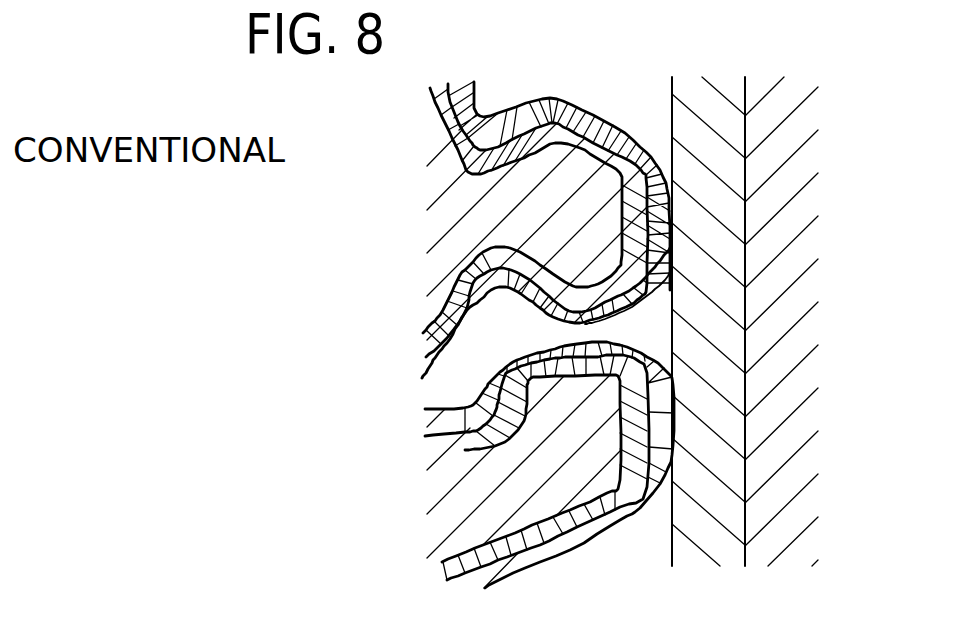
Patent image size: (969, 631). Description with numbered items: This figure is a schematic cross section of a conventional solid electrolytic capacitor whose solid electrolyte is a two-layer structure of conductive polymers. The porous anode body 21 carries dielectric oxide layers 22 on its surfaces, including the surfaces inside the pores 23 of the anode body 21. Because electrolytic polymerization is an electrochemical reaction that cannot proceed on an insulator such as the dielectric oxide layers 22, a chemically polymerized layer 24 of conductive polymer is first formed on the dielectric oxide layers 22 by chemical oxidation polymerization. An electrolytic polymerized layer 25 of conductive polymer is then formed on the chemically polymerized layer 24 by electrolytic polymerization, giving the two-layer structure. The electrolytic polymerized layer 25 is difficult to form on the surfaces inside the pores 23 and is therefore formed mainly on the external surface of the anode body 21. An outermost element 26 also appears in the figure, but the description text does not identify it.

The base body (solid rubber) 21 is at (460, 219).
The seal lip 22 is at (567, 132).
The lower seal lip 23 is at (445, 390).
The low-friction coating layer 24 is at (620, 138).
The window glass / first panel layer 25 is at (700, 102).
The second panel layer 26 is at (787, 107).